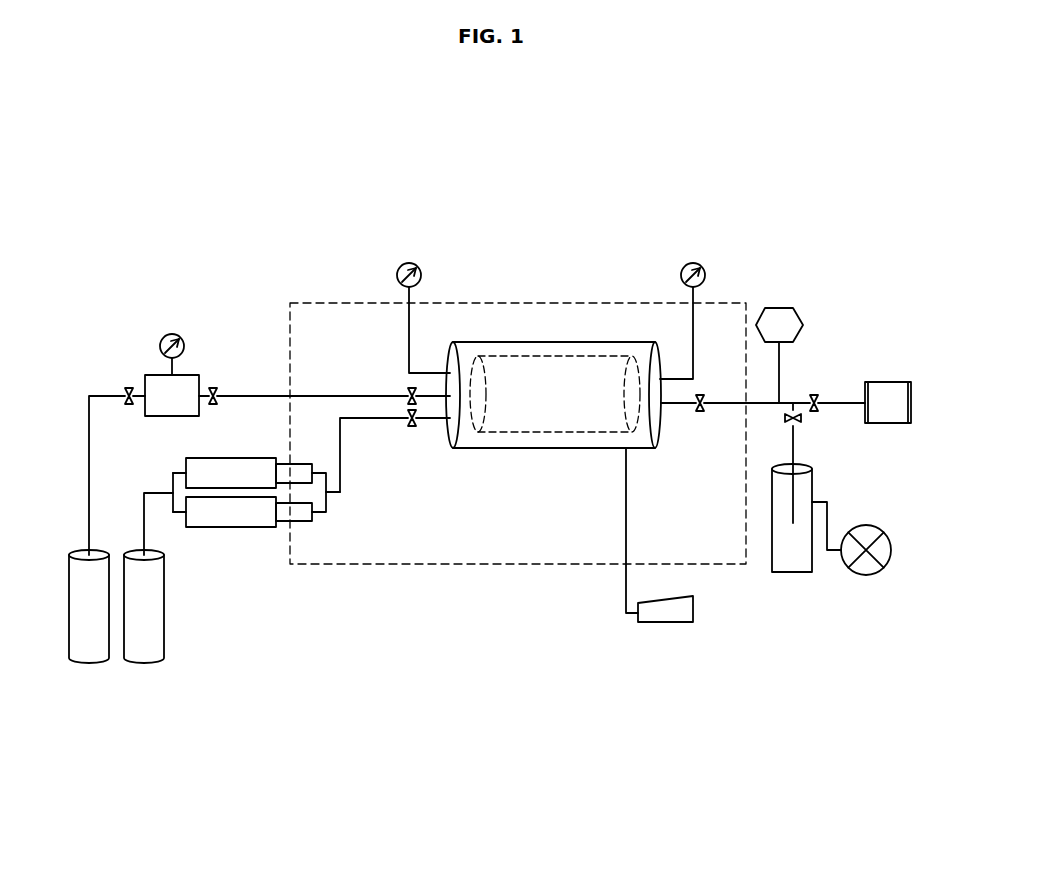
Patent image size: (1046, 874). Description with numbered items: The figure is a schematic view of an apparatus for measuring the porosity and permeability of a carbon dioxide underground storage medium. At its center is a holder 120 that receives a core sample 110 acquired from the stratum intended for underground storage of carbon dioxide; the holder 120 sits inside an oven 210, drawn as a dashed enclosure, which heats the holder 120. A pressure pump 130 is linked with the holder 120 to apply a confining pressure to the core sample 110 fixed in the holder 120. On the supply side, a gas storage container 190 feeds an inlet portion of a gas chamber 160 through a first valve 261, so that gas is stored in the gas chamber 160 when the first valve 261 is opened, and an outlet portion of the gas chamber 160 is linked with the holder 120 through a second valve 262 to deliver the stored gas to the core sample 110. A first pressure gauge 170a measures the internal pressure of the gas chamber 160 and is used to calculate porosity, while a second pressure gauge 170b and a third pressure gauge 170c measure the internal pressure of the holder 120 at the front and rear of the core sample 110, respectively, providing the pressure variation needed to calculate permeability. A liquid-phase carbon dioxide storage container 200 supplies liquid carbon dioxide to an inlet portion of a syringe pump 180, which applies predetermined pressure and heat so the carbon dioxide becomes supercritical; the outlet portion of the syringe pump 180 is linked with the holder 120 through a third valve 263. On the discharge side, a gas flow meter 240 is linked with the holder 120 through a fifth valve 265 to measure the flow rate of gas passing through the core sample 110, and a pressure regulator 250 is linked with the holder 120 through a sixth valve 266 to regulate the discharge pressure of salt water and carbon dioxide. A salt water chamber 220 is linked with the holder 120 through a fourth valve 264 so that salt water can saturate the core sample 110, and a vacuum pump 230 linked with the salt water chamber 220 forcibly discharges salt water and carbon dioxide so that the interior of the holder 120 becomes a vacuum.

The core sample 110 is at (553, 363).
The holder 120 is at (518, 442).
The pressure pump 130 is at (665, 615).
The gas chamber 160 is at (157, 375).
The first pressure gauge 170a is at (172, 334).
The second pressure gauge 170b is at (410, 263).
The third pressure gauge 170c is at (693, 263).
The syringe pump 180 is at (226, 520).
The gas storage container 190 is at (88, 653).
The liquid-phase carbon dioxide storage container 200 is at (143, 653).
The oven 210 is at (519, 563).
The salt water chamber 220 is at (792, 567).
The vacuum pump 230 is at (867, 567).
The gas flow meter 240 is at (890, 388).
The pressure regulator 250 is at (778, 315).
The first valve 261 is at (128, 387).
The second valve 262 is at (213, 387).
The third valve 263 is at (412, 427).
The fourth valve 264 is at (805, 417).
The fifth valve 265 is at (814, 393).
The sixth valve 266 is at (698, 412).